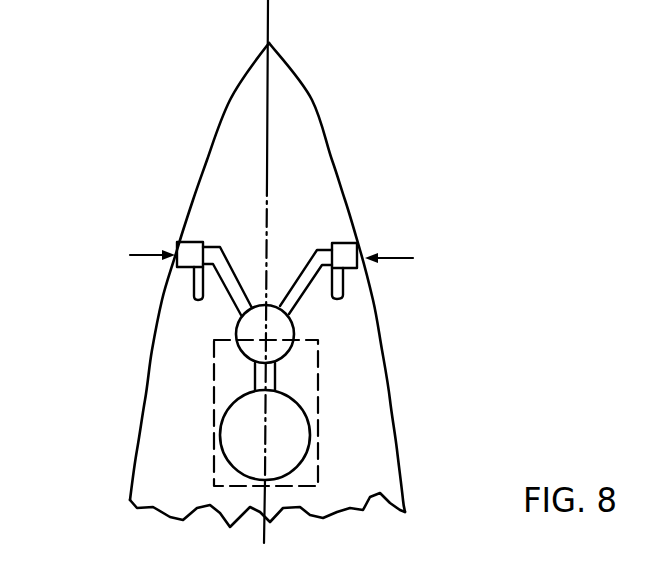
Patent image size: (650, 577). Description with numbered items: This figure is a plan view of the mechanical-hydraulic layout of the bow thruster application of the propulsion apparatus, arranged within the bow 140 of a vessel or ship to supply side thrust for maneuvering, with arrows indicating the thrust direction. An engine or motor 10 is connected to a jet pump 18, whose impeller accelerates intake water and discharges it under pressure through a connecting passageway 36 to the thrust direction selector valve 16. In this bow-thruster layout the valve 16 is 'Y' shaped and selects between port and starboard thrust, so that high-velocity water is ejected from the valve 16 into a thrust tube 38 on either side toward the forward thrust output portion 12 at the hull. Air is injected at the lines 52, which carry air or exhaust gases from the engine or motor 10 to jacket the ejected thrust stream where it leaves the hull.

The engine or motor 10 is at (319, 375).
The forward thrust output portion 12 is at (187, 242).
The thrust direction selector valve 16 is at (294, 322).
The jet pump 18 is at (311, 434).
The connecting passageway 36 is at (276, 383).
The thrust tube 38 is at (219, 245).
The exhaust tube 52 is at (194, 287).
The bow 140 is at (317, 115).